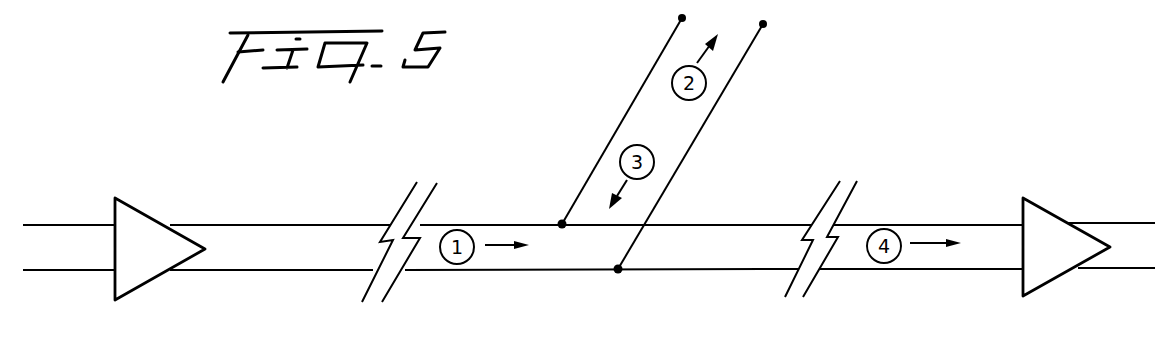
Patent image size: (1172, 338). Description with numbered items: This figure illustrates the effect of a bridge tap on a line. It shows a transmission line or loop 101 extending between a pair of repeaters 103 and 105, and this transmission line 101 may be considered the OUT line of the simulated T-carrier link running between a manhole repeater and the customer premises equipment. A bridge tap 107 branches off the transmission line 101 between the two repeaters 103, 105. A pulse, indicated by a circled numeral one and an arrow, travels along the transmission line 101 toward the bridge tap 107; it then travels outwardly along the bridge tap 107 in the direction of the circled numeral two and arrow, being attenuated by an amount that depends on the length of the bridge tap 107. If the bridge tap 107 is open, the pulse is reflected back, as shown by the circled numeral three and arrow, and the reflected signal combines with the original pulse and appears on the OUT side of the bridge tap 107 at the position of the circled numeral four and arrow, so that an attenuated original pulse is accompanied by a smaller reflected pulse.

The transmission line 101 is at (303, 225).
The repeater 103 is at (114, 285).
The repeater 105 is at (1058, 274).
The bridge tap 107 is at (646, 80).